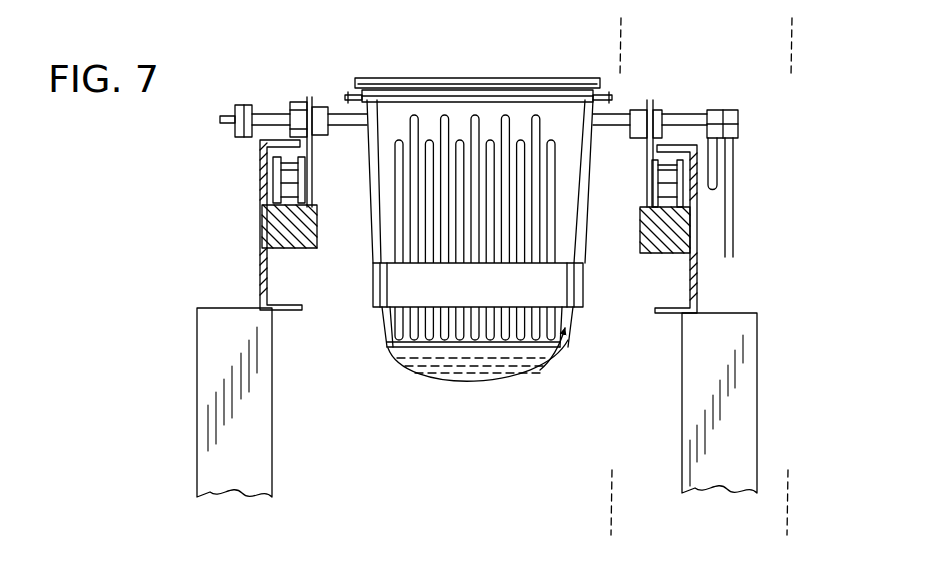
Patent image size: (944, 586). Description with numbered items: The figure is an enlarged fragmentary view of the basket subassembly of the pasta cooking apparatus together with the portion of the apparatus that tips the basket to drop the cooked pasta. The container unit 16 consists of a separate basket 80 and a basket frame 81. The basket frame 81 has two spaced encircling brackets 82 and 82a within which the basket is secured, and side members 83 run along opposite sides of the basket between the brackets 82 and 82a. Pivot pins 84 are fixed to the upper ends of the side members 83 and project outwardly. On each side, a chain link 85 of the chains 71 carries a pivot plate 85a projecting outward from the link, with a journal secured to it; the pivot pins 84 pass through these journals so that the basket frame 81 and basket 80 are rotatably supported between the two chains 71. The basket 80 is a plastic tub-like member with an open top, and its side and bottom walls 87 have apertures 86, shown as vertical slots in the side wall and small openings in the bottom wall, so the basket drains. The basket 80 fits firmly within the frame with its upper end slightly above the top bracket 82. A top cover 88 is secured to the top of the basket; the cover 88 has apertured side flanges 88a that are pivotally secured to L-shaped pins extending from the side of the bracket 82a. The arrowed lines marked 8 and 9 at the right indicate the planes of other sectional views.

The container unit 16 is at (457, 394).
The chains 71 is at (666, 160).
The basket 80 is at (572, 317).
The basket frame 81 is at (372, 238).
The encircling bracket 82 is at (557, 108).
The encircling bracket 82a is at (584, 285).
The side member 83 is at (575, 240).
The pivot pin 84 is at (347, 122).
The chain link 85 is at (290, 173).
The pivot plate 85a is at (309, 99).
The apertures 86 is at (520, 342).
The side and bottom walls 87 is at (402, 360).
The top cover 88 is at (450, 78).
The side flange 88a is at (356, 85).
The section line 8- 8 is at (795, 35).
The section line 9- 9 is at (624, 28).